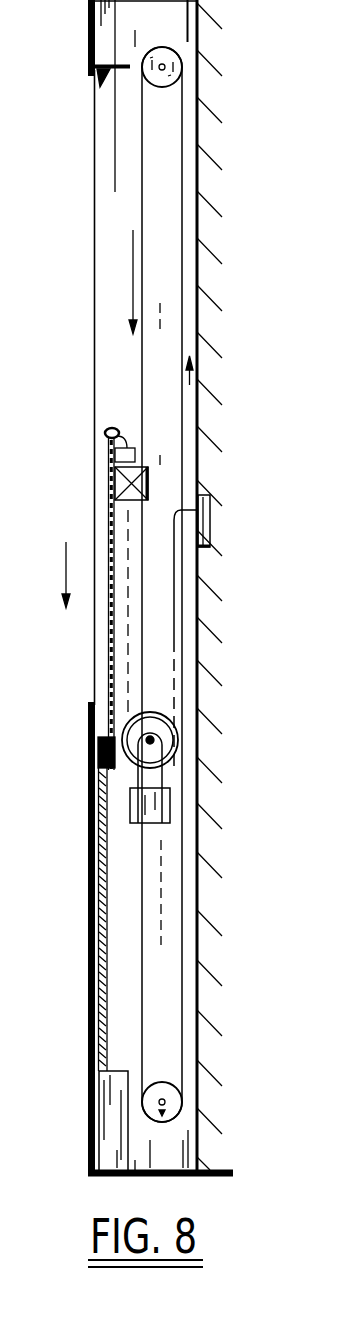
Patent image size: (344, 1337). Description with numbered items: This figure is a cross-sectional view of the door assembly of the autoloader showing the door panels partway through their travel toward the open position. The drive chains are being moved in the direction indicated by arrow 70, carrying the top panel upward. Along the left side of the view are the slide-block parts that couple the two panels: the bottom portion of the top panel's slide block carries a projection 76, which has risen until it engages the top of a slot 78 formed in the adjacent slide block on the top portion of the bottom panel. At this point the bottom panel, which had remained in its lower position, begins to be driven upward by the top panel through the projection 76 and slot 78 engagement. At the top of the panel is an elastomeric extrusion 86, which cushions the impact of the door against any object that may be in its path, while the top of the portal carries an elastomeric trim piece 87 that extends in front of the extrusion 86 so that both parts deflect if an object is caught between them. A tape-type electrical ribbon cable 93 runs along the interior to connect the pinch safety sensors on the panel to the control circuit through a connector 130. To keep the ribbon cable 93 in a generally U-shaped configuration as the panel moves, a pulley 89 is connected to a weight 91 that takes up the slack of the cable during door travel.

The arrow indicating chain movement direction 70 is at (63, 571).
The projection 76 is at (102, 782).
The slot 78 is at (103, 727).
The elastomeric extrusion 86 is at (109, 430).
The elastomeric trim piece 87 is at (93, 93).
The pulley 89 is at (177, 737).
The weight 91 is at (170, 807).
The ribbon cable 93 is at (175, 603).
The connector 130 is at (211, 523).